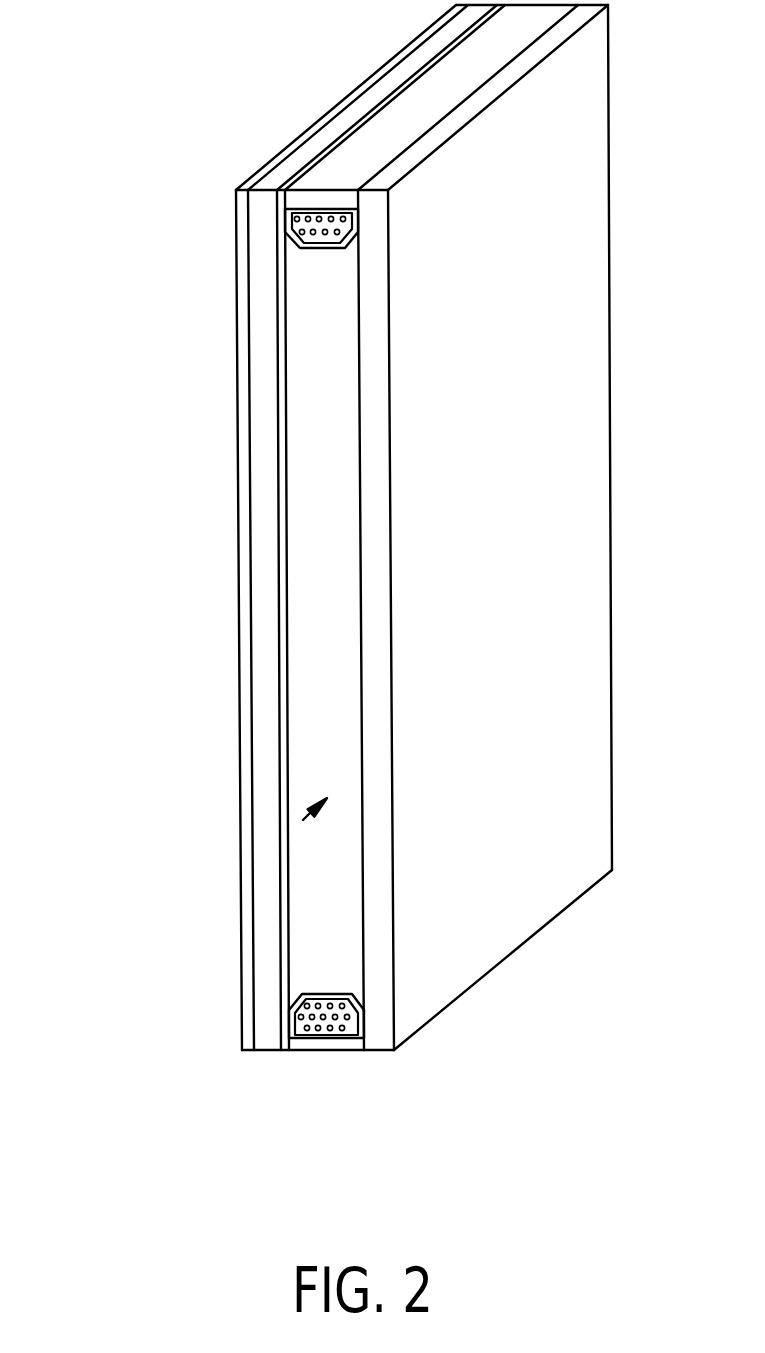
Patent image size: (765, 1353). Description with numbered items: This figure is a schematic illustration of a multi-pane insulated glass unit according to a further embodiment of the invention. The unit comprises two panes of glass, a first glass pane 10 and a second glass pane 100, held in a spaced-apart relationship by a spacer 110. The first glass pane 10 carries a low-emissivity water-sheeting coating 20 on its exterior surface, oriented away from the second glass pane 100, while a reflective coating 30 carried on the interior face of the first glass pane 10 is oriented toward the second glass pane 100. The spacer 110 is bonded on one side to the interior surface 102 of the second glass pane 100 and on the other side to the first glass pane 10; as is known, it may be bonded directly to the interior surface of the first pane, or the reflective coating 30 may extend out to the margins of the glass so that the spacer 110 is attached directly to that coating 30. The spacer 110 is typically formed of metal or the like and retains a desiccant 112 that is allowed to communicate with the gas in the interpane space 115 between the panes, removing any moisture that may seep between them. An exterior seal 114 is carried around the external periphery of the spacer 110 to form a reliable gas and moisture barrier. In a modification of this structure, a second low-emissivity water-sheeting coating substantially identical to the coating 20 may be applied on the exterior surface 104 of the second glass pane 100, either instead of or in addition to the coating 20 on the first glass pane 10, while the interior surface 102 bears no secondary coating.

The first glass pane 10 is at (260, 537).
The low-emissivity water-sheeting coating 20 is at (242, 282).
The reflective coating 30 is at (285, 378).
The second glass pane 100 is at (378, 518).
The interior surface of the second glass pane 102 is at (360, 628).
The exterior surface of the second glass pane 104 is at (542, 440).
The spacer 110 is at (328, 240).
The desiccant 112 is at (352, 220).
The exterior seal 114 is at (341, 200).
The interpane space 115 is at (303, 820).